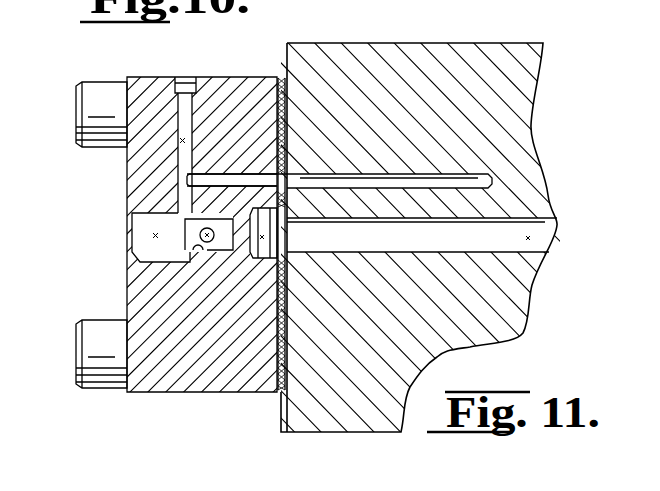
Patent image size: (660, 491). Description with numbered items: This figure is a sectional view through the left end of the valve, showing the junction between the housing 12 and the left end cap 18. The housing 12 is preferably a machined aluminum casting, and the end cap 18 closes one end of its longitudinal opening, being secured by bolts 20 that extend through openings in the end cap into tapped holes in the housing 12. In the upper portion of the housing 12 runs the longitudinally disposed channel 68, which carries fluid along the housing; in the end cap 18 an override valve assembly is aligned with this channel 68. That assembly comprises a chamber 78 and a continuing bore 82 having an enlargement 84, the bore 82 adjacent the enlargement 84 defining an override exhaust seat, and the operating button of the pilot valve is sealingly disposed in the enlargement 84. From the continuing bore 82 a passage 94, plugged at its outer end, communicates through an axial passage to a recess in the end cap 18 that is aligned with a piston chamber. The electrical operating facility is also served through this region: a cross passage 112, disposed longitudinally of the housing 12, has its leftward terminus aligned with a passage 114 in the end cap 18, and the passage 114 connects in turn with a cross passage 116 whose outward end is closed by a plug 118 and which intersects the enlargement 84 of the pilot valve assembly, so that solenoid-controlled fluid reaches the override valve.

The housing 12 is at (521, 43).
The left end cap 18 is at (125, 288).
The bolts 20 is at (103, 82).
The channel 68 is at (532, 238).
The chamber 78 is at (266, 237).
The continuing bore 82 is at (207, 251).
The enlargement 84 is at (152, 235).
The passage 94 is at (201, 231).
The cross passage 112 is at (350, 176).
The passage 114 is at (234, 174).
The cross passage 116 is at (181, 141).
The plug 118 is at (184, 88).